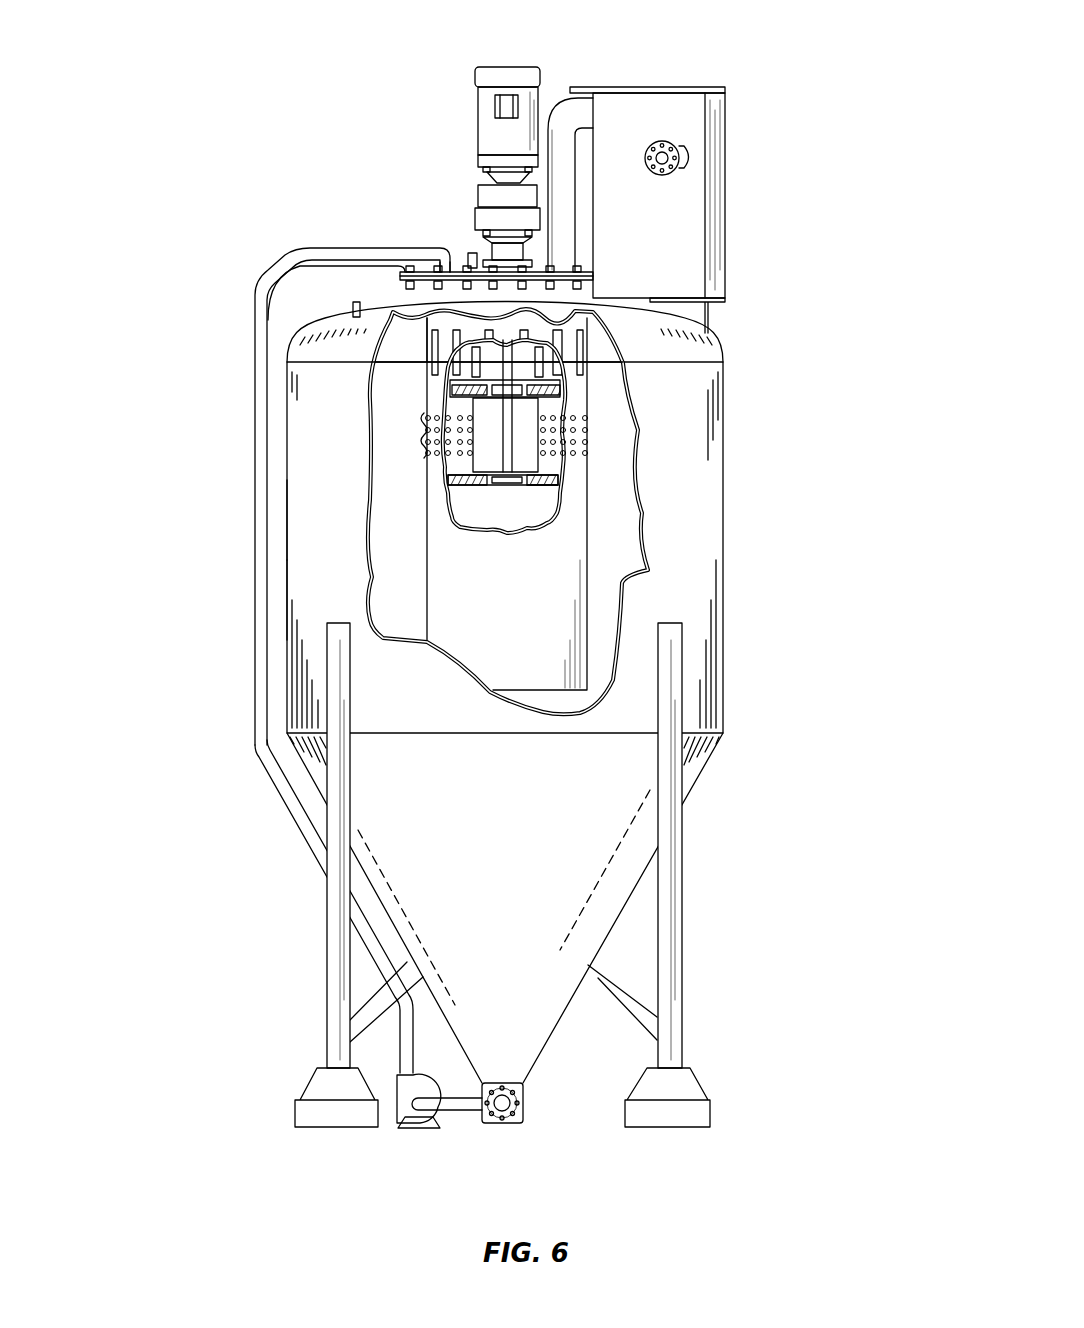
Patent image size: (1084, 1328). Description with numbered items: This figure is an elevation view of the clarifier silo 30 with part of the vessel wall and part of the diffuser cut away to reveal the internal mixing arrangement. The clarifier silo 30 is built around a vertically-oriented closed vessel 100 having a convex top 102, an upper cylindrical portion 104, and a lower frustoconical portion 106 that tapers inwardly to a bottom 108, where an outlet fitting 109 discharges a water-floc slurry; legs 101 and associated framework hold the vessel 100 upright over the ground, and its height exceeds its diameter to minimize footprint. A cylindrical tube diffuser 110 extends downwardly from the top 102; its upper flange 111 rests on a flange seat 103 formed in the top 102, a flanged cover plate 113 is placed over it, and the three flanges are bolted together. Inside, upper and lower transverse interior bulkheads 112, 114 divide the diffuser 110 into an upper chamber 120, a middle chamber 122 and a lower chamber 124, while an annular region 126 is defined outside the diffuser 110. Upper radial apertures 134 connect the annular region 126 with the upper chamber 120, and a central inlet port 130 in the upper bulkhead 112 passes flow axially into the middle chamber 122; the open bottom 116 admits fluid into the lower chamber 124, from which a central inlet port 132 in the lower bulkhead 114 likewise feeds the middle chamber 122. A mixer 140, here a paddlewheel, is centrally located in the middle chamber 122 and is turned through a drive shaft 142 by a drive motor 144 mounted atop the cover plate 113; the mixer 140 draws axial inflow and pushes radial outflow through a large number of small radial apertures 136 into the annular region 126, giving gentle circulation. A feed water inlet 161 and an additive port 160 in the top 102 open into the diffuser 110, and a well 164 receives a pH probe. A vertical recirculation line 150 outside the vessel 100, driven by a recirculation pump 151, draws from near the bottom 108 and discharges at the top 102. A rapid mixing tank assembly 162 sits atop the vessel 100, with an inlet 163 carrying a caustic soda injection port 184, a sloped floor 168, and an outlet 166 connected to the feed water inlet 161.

The clarifier silo 30 is at (287, 540).
The vessel 100 is at (287, 690).
The legs 101 is at (327, 967).
The convex top 102 is at (298, 335).
The flange seat 103 is at (387, 268).
The upper cylindrical portion 104 is at (287, 610).
The lower frustoconical portion 106 is at (408, 867).
The bottom 108 is at (520, 1083).
The outlet fitting 109 is at (505, 1125).
The cylindrical tube diffuser 110 is at (587, 637).
The upper flange 111 is at (388, 277).
The upper transverse interior bulkhead 112 is at (545, 398).
The flanged cover plate 113 is at (400, 277).
The lower transverse interior bulkhead 114 is at (545, 487).
The bottom of diffuser 116 is at (543, 712).
The upper chamber 120 is at (550, 368).
The middle chamber 122 is at (450, 482).
The lower chamber 124 is at (497, 487).
The annular region 126 is at (396, 597).
The central inlet port 130 is at (587, 455).
The central inlet port 132 is at (500, 400).
The upper radial apertures 134 is at (427, 365).
The small radial apertures 136 is at (420, 435).
The mixer 140 is at (473, 460).
The drive shaft 142 is at (450, 388).
The drive motor 144 is at (479, 98).
The vertical recirculation line 150 is at (285, 803).
The recirculation pump 151 is at (420, 1120).
The port 160 is at (471, 253).
The feed water inlet 161 is at (577, 235).
The rapid mixing tank assembly 162 is at (725, 192).
The inlet 163 is at (662, 141).
The well 164 is at (352, 308).
The outlet 166 is at (563, 98).
The floor 168 is at (648, 300).
The caustic soda injection port 184 is at (687, 147).